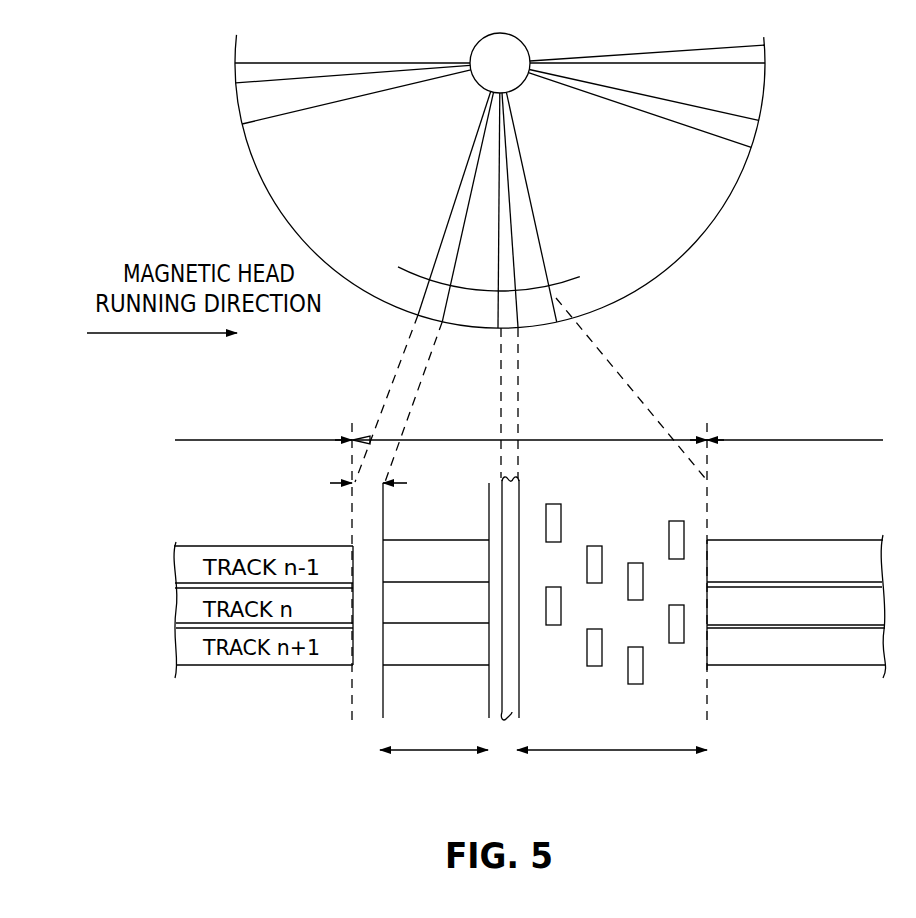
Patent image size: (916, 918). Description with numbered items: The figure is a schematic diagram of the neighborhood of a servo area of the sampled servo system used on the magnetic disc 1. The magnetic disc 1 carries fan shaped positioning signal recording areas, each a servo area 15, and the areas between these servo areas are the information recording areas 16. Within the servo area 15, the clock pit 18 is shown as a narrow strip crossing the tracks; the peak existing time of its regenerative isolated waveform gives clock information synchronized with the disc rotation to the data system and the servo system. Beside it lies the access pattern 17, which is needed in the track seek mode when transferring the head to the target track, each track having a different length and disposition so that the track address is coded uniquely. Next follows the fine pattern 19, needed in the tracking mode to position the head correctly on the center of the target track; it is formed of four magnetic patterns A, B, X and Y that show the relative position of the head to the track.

The magnetic disc 1 is at (718, 215).
The servo area 15 is at (618, 440).
The information recording area 16 is at (240, 440).
The access pattern 17 is at (420, 750).
The clock pit 18 is at (512, 712).
The fine pattern 19 is at (670, 750).